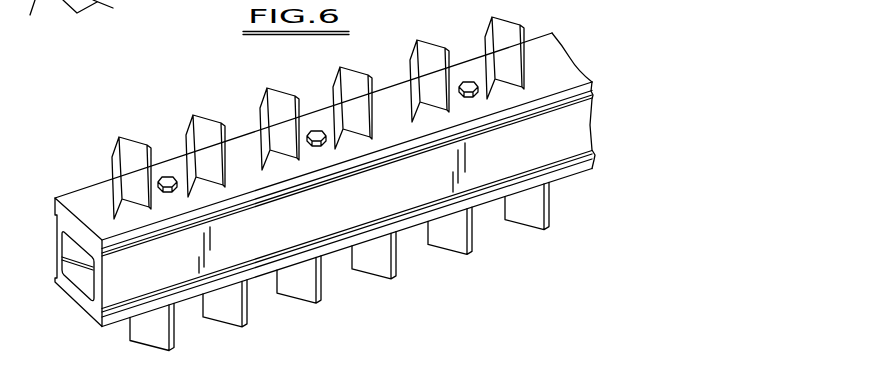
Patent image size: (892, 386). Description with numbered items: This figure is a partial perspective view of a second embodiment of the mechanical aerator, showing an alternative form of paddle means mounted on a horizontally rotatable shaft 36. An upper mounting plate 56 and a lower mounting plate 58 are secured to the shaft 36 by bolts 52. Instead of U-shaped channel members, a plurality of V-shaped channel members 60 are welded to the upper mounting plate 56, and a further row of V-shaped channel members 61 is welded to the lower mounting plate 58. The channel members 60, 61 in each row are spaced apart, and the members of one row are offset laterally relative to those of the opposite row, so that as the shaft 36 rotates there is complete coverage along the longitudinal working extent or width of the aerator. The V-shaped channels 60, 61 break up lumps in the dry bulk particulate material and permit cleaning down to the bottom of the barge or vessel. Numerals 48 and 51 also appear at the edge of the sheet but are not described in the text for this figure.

The shaft 36 is at (345, 209).
The bolts 52 is at (167, 192).
The upper mounting plate 56 is at (563, 65).
The lower mounting plate 58 is at (113, 321).
The V-shaped channel members 60 is at (134, 141).
The V-shaped channel members 61 is at (230, 311).
The member of adjacent figure 48 is at (21, 26).
The member of adjacent figure 51 is at (97, 10).